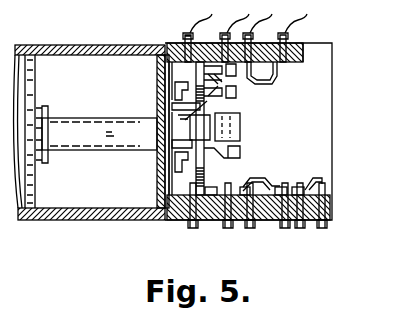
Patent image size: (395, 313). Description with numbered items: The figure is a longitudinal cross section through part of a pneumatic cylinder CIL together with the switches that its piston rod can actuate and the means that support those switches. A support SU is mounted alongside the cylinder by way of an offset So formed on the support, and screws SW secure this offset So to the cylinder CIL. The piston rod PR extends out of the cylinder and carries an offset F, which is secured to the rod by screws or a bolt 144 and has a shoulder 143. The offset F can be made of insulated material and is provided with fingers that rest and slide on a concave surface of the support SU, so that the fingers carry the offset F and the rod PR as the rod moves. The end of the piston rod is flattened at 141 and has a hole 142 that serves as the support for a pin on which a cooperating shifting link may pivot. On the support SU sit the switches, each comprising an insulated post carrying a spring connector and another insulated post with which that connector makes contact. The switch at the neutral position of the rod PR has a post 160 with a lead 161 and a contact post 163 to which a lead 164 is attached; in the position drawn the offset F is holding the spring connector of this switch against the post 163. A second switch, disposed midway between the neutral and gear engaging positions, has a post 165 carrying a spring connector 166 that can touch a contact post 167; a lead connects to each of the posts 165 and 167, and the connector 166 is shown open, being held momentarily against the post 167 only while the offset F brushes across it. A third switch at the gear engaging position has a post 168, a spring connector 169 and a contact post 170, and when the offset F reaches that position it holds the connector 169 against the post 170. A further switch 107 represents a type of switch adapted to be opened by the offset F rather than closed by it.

The switch 107 is at (262, 82).
The flattened portion of piston rod 141 is at (241, 132).
The hole 142 is at (227, 124).
The shoulder 143 is at (162, 148).
The bolt 144 is at (178, 122).
The post 160 is at (232, 229).
The lead 161 is at (222, 229).
The contact post 163 is at (210, 226).
The lead 164 is at (190, 227).
The post 165 is at (287, 229).
The spring connector 166 is at (270, 182).
The contact post 167 is at (251, 229).
The post 168 is at (303, 228).
The spring connector 169 is at (316, 178).
The contact post 170 is at (338, 210).
The cylinder CIL is at (74, 45).
The piston rod PR is at (96, 134).
The screws SW is at (168, 74).
The offset on support So is at (179, 127).
The offset F is at (208, 113).
The support SU is at (332, 58).